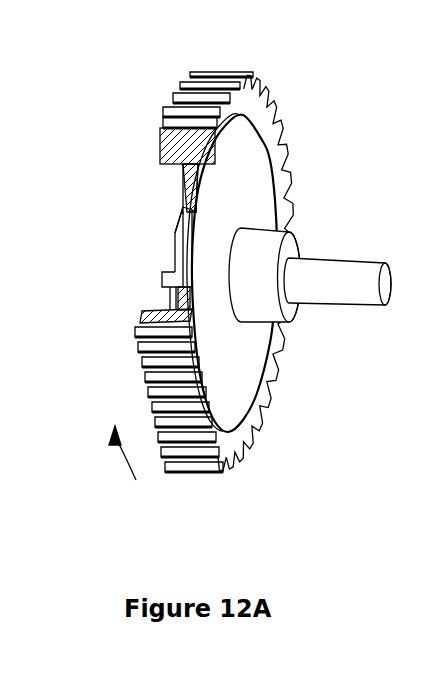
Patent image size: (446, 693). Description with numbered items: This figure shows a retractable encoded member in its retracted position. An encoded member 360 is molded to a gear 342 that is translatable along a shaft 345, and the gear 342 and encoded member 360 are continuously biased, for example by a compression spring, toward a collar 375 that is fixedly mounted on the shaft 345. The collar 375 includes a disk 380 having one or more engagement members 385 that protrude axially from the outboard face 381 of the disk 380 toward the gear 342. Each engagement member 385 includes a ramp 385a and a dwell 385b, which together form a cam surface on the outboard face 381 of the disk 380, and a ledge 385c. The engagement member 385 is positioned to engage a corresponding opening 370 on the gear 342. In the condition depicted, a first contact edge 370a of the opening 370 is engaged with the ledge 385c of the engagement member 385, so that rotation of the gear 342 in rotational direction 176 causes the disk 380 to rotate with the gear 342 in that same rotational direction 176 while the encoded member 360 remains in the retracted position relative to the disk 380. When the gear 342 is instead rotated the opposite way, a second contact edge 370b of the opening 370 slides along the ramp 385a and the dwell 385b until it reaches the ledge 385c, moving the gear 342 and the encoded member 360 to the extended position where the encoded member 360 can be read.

The gear 342 is at (212, 64).
The shaft 345 is at (353, 257).
The collar 375 is at (295, 316).
The disk 380 is at (247, 394).
The encoded member 360 is at (176, 173).
The opening 370 is at (182, 207).
The first contact edge 370a is at (170, 293).
The second contact edge 370b is at (181, 210).
The engagement member 385 is at (173, 268).
The ramp 385a is at (180, 226).
The dwell 385b is at (174, 256).
The ledge 385c is at (163, 283).
The outboard face 381 is at (142, 318).
The rotational direction 176 is at (122, 462).